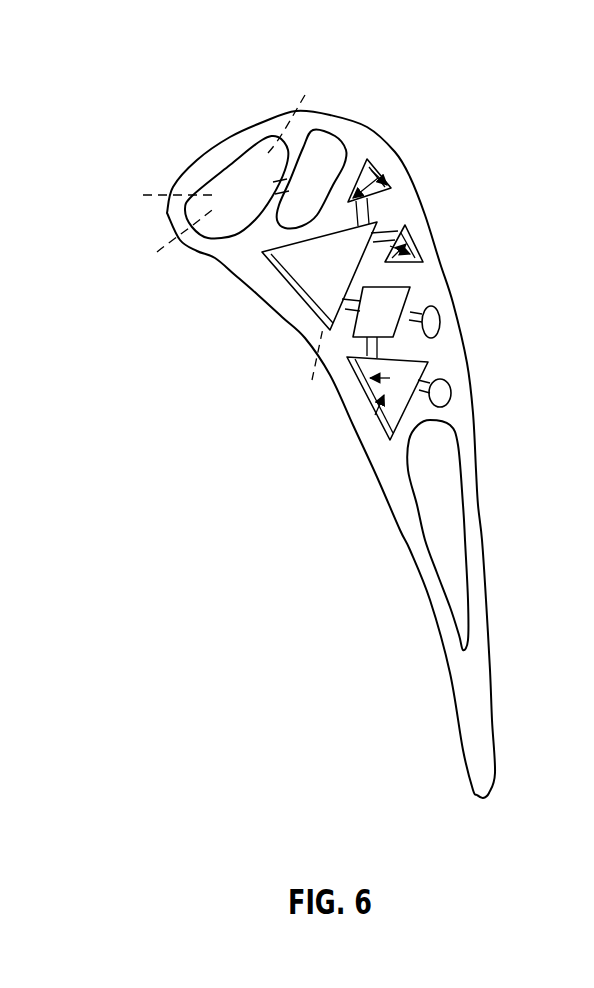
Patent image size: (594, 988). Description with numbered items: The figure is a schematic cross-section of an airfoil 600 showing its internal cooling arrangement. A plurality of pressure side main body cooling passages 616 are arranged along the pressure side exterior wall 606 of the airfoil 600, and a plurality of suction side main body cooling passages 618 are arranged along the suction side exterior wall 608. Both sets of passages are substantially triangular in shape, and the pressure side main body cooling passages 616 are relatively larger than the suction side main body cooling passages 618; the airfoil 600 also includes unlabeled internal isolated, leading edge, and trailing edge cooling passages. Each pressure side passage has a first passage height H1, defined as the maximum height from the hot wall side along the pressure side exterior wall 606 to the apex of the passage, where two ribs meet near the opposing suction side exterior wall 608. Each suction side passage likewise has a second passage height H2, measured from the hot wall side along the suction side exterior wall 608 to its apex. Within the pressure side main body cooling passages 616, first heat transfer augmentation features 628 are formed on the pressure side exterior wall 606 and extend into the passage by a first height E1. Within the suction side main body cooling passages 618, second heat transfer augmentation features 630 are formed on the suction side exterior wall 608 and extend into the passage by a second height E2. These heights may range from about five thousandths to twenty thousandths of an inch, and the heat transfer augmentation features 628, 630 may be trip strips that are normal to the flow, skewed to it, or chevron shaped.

The airfoil 600 is at (148, 70).
The pressure side exterior wall 606 is at (353, 418).
The suction side exterior wall 608 is at (478, 462).
The pressure side main body cooling passages 616 is at (310, 290).
The suction side main body cooling passages 618 is at (395, 185).
The first heat transfer augmentation features 628 is at (372, 225).
The second heat transfer augmentation features 630 is at (381, 158).
The first passage height H1 is at (330, 312).
The second passage height H2 is at (339, 162).
The first height E1 is at (398, 378).
The second height E2 is at (420, 237).